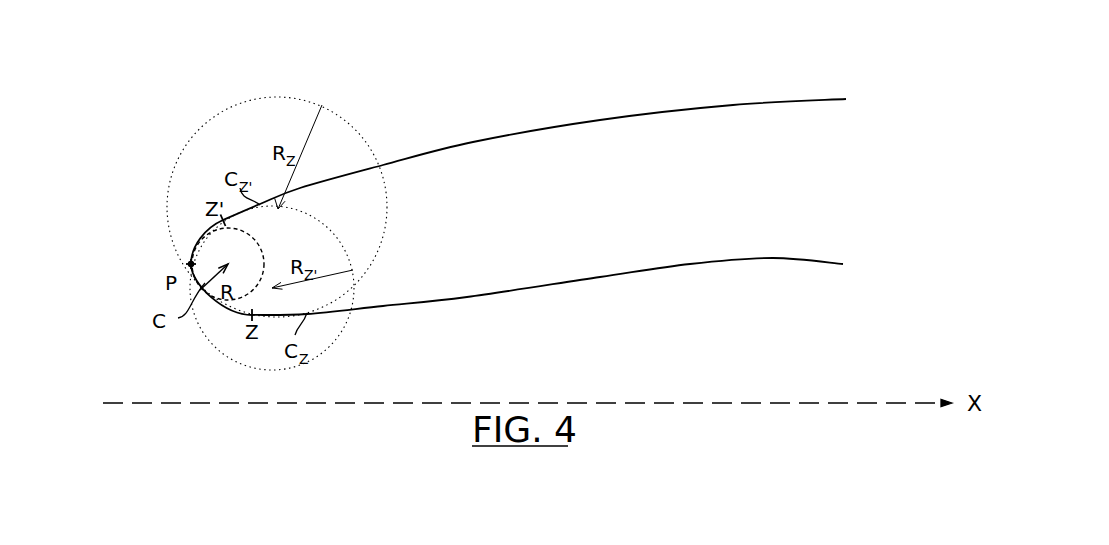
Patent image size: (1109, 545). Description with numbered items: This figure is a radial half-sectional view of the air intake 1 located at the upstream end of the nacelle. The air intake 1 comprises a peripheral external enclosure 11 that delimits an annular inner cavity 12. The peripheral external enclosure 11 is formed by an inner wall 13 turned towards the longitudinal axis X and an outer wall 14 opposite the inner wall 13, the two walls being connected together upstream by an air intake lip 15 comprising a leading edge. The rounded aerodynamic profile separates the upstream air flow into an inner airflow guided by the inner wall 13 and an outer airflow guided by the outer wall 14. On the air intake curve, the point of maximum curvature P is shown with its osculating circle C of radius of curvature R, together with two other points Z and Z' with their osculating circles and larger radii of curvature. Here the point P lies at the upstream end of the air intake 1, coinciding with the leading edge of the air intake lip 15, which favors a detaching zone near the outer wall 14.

The air intake 1 is at (128, 148).
The peripheral external enclosure 11 is at (418, 148).
The annular inner cavity 12 is at (592, 221).
The inner wall 13 is at (471, 302).
The outer wall 14 is at (473, 142).
The air intake lip 15 is at (190, 264).